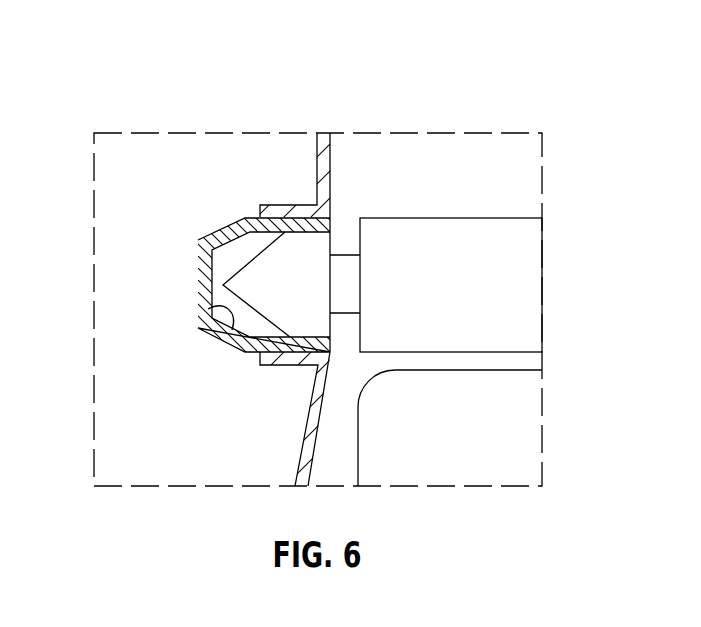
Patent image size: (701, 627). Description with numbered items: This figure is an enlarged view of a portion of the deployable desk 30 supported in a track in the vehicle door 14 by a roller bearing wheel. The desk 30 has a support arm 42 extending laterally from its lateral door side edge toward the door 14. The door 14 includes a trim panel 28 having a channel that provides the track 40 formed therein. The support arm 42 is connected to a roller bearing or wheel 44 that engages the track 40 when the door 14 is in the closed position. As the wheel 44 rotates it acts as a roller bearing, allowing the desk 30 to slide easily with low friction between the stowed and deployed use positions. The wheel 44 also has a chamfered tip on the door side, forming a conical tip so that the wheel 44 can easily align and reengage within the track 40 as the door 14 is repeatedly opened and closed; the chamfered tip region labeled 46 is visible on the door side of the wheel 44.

The door 14 is at (213, 158).
The trim panel 28 is at (317, 182).
The deployable desk 30 is at (503, 218).
The track 40 is at (210, 308).
The support arm 42 is at (338, 260).
The roller bearing wheel 44 is at (283, 263).
The spring contact 46 is at (240, 270).